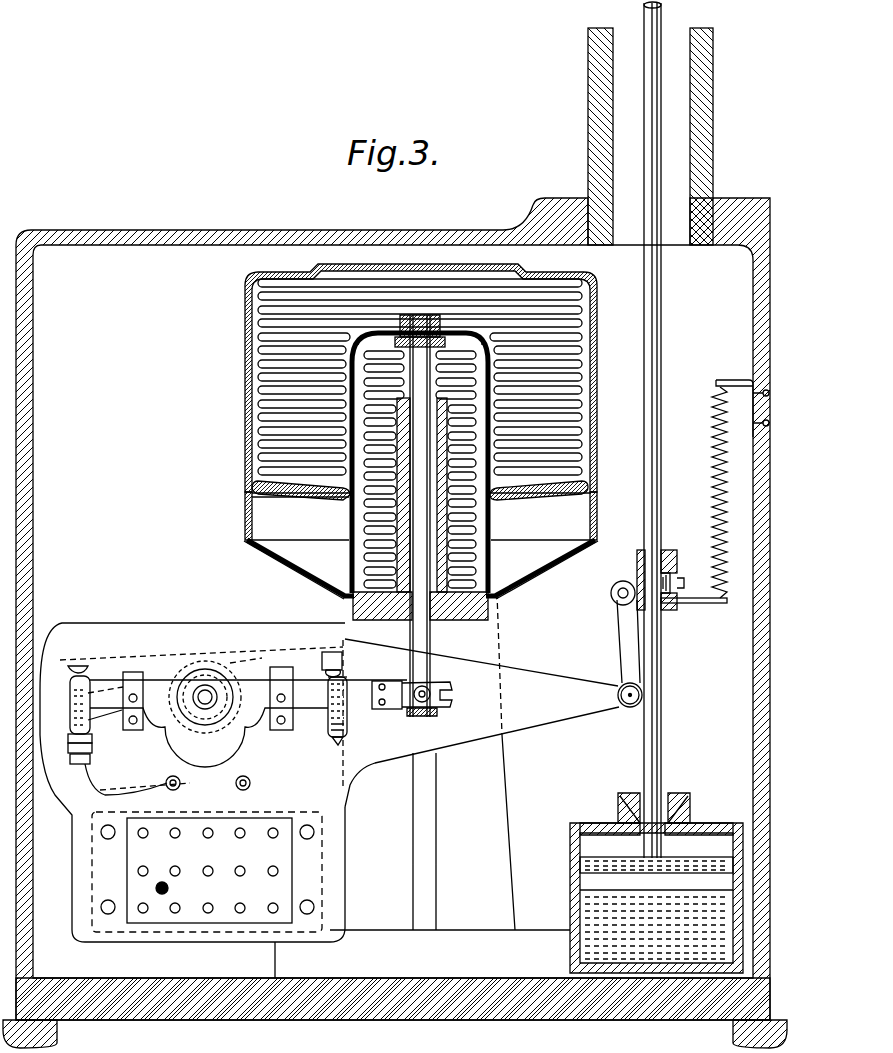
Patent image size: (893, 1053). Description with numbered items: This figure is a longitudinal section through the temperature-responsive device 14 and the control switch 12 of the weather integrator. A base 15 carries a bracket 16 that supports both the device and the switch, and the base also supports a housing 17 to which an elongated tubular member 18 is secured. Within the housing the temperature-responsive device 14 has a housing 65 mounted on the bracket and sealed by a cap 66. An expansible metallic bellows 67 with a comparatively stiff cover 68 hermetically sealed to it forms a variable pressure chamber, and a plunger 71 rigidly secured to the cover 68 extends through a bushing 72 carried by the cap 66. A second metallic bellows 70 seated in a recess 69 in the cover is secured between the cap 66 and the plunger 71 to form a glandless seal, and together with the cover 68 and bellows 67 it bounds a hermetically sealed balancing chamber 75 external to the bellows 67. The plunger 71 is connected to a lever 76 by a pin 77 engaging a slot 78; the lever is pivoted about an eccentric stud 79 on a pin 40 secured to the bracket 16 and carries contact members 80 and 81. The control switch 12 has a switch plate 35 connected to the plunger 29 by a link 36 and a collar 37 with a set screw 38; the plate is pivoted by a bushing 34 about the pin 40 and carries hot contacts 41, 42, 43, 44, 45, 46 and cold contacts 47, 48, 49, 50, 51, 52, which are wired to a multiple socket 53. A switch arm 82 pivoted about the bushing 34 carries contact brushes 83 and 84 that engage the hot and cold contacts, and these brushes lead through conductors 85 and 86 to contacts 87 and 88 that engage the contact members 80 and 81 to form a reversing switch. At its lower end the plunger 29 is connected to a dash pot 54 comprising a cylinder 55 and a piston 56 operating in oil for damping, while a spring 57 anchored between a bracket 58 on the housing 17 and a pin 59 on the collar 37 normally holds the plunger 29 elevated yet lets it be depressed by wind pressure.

The control switch 12 is at (205, 633).
The temperature-responsive device 14 is at (238, 338).
The base 15 is at (258, 1020).
The bracket 16 is at (505, 800).
The housing 17 is at (33, 540).
The elongated tubular member 18 is at (700, 150).
The plunger 29 is at (656, 352).
The bushing 34 is at (175, 735).
The switch plate 35 is at (470, 738).
The link 36 is at (618, 650).
The collar 37 is at (668, 550).
The set screw 38 is at (684, 583).
The pin 40 is at (205, 733).
The hot contact 41 is at (70, 683).
The hot contact 42 is at (70, 697).
The hot contact 43 is at (70, 711).
The hot contact 44 is at (68, 738).
The hot contact 45 is at (68, 749).
The hot contact 46 is at (78, 764).
The cold contact 47 is at (340, 740).
The cold contact 48 is at (347, 712).
The cold contact 49 is at (347, 697).
The cold contact 50 is at (385, 681).
The cold contact 51 is at (345, 680).
The cold contact 52 is at (340, 670).
The multiple socket 53 is at (207, 872).
The dash pot 54 is at (618, 808).
The cylinder 55 is at (575, 907).
The piston 56 is at (580, 880).
The spring 57 is at (712, 462).
The bracket 58 is at (735, 380).
The pin 59 is at (700, 603).
The housing 65 is at (246, 382).
The cap 66 is at (300, 568).
The expansible metallic bellows 67 is at (262, 431).
The cover 68 is at (313, 497).
The recess 69 is at (350, 495).
The second metallic bellows 70 is at (480, 511).
The plunger 71 is at (410, 633).
The bushing 72 is at (452, 620).
The balancing chamber 75 is at (406, 450).
The lever 76 is at (440, 683).
The pin 77 is at (450, 695).
The slot 78 is at (437, 712).
The eccentric stud 79 is at (205, 690).
The contact member 80 is at (70, 724).
The contact member 81 is at (347, 722).
The switch arm 82 is at (258, 733).
The contact brush 83 is at (113, 718).
The contact brush 84 is at (308, 720).
The conductor 85 is at (135, 675).
The conductor 86 is at (280, 673).
The contact 87 is at (82, 666).
The contact 88 is at (330, 652).